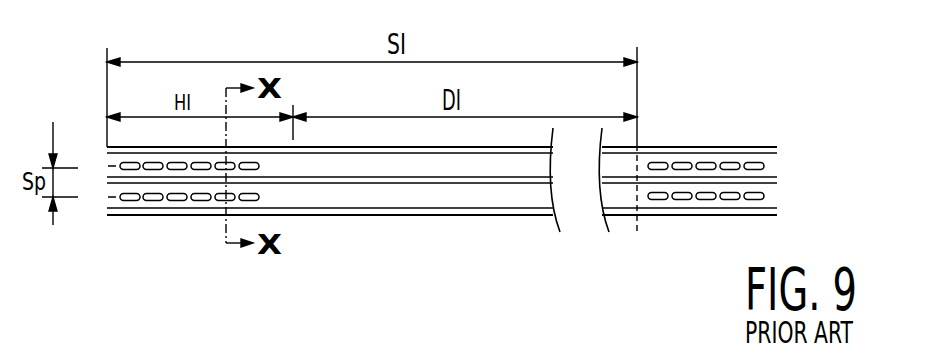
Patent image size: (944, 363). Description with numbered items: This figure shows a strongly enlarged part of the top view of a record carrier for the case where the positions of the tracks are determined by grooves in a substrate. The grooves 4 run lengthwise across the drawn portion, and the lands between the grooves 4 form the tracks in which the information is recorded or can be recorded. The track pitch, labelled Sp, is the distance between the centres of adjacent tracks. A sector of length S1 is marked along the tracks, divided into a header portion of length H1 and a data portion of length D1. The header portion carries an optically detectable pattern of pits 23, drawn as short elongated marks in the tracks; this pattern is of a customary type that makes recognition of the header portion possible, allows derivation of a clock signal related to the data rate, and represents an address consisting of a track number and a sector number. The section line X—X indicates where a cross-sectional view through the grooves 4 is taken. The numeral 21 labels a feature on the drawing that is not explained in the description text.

The grooves 4 is at (398, 198).
The conduit wall 21 is at (120, 147).
The pits 23 is at (176, 201).